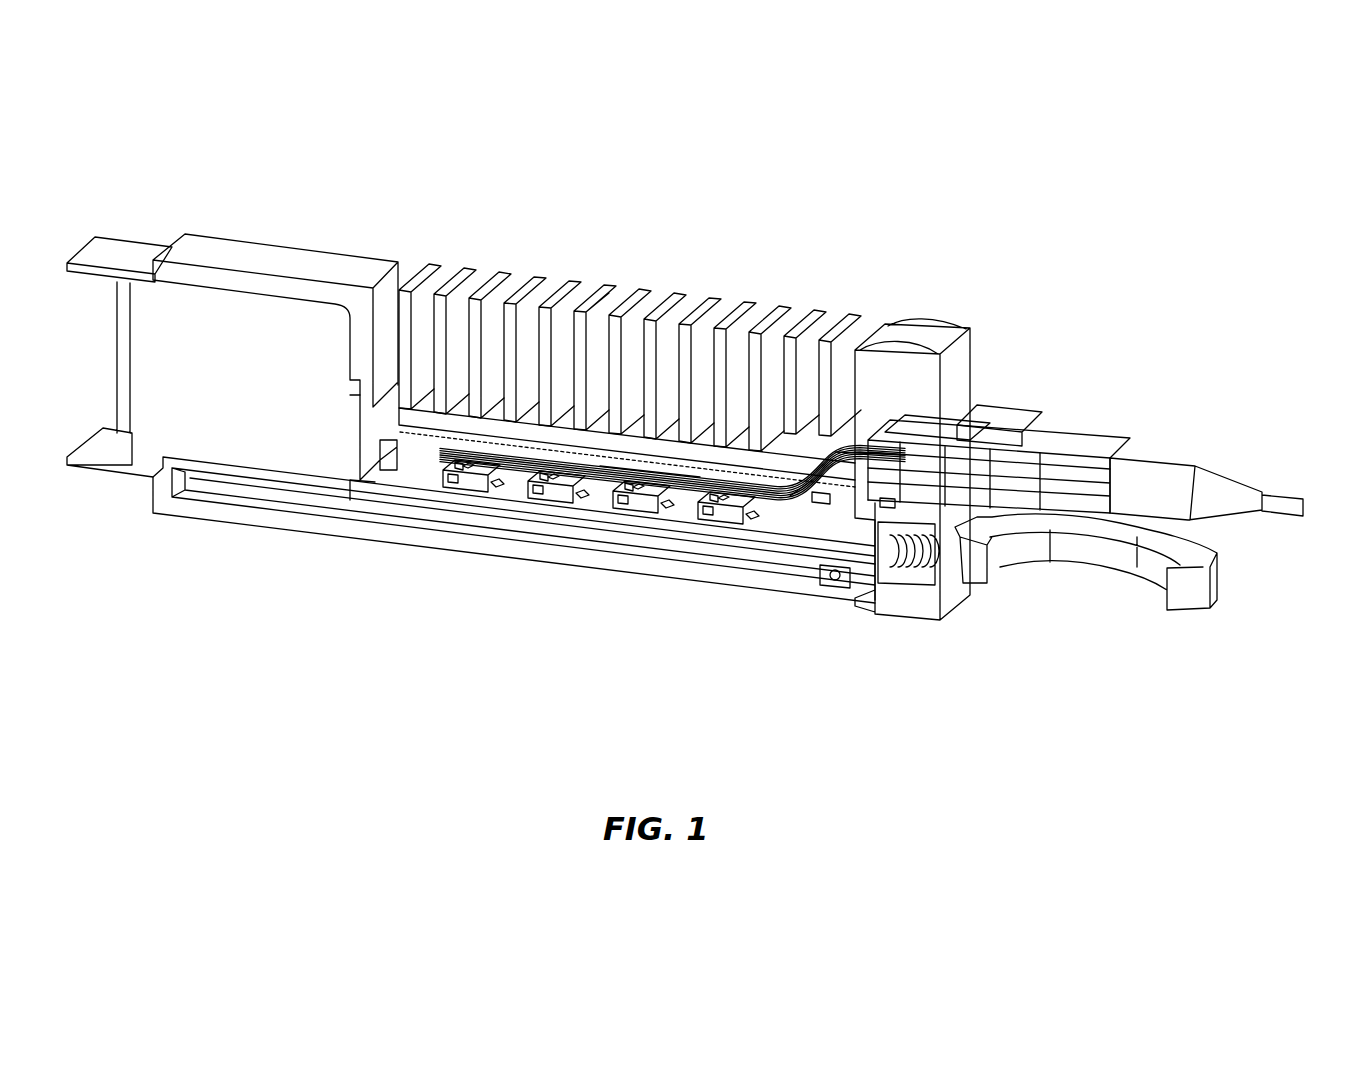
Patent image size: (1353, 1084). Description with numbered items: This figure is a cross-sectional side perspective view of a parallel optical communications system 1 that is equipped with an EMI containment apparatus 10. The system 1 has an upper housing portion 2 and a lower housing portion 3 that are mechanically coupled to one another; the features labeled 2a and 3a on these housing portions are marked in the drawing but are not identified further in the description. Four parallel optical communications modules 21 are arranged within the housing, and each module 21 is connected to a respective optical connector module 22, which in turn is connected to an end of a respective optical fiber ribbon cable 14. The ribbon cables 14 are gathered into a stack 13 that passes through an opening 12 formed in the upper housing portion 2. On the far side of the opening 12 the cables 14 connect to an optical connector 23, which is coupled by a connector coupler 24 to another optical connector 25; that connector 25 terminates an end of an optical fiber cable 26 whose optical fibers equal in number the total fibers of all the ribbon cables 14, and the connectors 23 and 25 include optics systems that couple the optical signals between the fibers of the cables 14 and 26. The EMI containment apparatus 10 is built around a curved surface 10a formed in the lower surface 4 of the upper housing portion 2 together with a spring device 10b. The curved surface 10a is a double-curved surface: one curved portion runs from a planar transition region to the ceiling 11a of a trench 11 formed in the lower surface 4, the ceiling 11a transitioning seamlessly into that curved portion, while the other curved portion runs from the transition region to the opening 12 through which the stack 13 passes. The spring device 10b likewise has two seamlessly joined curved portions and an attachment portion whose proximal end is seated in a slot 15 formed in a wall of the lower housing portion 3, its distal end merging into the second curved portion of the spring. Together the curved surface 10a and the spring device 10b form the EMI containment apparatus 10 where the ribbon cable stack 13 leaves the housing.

The parallel optical communications system 1 is at (1090, 270).
The upper housing portion 2 is at (316, 266).
The cover engaging portion 2a is at (348, 486).
The lower housing portion 3 is at (207, 508).
The circuit board mounting surface 3a is at (427, 483).
The lower surface 4 is at (380, 442).
The EMI containment apparatus 10 is at (852, 435).
The curved surface 10a is at (805, 470).
The spring device 10b is at (866, 462).
The trench 11 is at (440, 439).
The ceiling 11a is at (507, 446).
The opening 12 is at (868, 450).
The stack 13 is at (842, 452).
The optical fiber ribbon cable 14 is at (818, 498).
The slot 15 is at (882, 502).
The parallel optical communications module 21 is at (728, 512).
The optical connector module 22 is at (712, 496).
The optical connector 23 is at (932, 448).
The connector coupler 24 is at (1005, 416).
The optical connector 25 is at (1087, 472).
The optical fiber cable 26 is at (1282, 498).